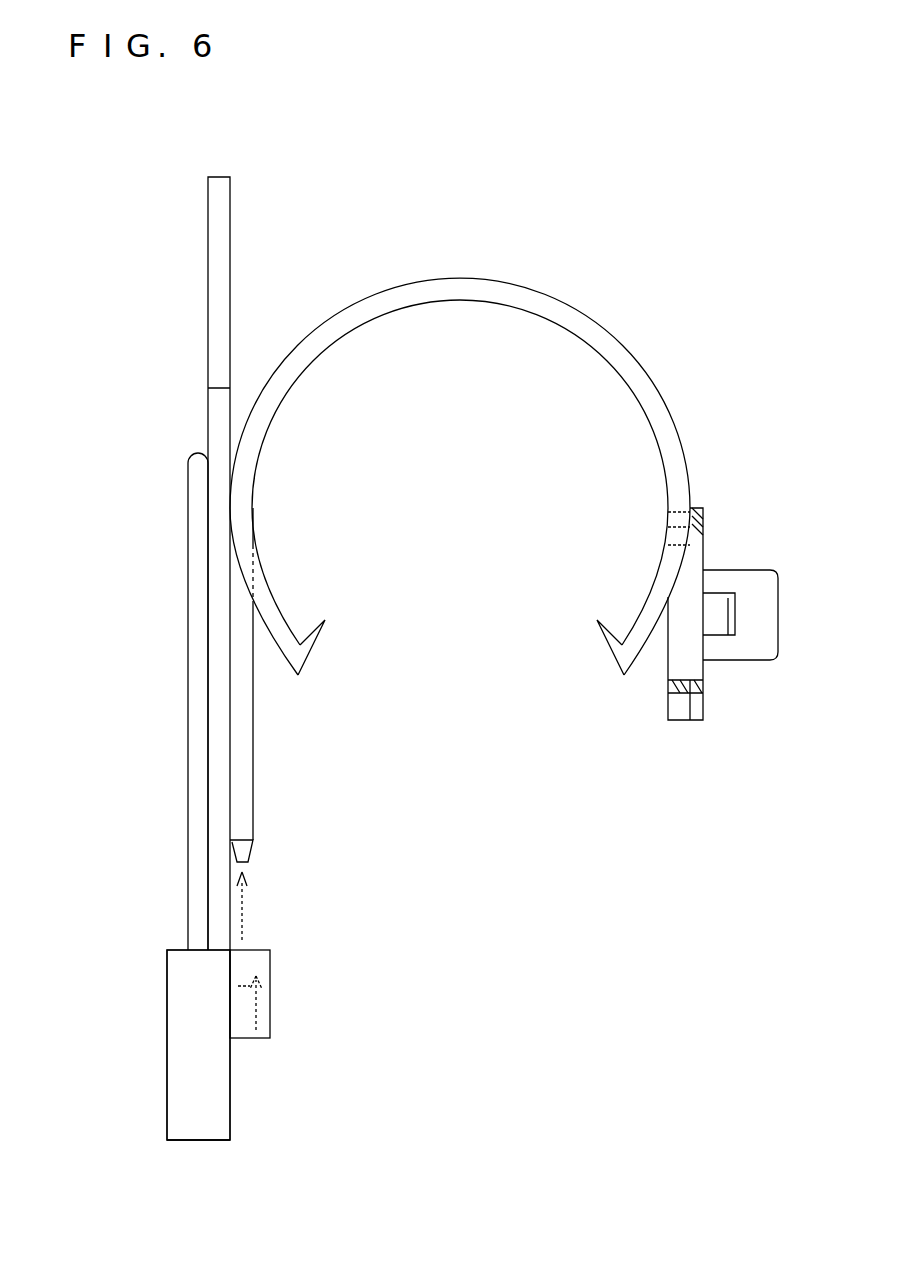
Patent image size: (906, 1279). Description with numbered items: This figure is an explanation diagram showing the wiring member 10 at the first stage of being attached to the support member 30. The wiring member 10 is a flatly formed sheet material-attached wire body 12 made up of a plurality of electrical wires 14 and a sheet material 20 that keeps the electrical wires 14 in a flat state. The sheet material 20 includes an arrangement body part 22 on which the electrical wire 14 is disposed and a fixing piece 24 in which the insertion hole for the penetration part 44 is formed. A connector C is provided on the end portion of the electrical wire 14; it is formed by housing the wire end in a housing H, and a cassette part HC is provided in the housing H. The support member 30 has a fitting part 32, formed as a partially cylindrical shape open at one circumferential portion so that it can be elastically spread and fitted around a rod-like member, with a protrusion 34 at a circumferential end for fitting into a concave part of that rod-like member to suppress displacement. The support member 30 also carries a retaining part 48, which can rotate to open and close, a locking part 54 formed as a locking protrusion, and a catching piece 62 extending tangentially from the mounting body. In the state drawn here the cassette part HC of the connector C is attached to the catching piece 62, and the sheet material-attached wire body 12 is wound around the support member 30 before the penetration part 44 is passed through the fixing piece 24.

The wiring member 10 is at (162, 1069).
The sheet material-attached wire body 12 is at (153, 982).
The electrical wire 14 is at (197, 845).
The sheet material 20 is at (170, 563).
The arrangement body part 22 is at (190, 669).
The fixing piece 24 is at (215, 343).
The support member 30 is at (460, 440).
The fitting part 32 is at (273, 617).
The protrusion 34 is at (313, 642).
The penetration part 44 is at (717, 630).
The retaining part 48 is at (673, 670).
The locking part 54 is at (743, 609).
The catching piece 62 is at (242, 795).
The housing H is at (177, 1112).
The cassette part HC is at (253, 1035).
The connector C is at (195, 1140).